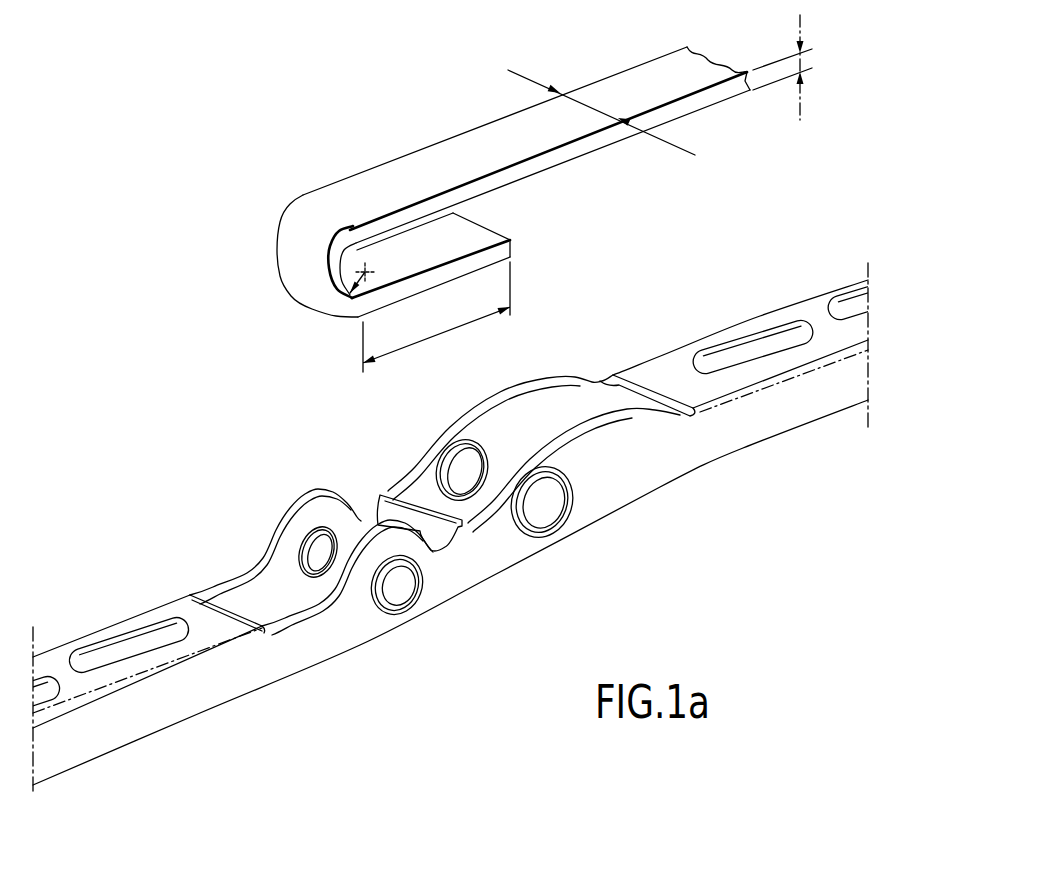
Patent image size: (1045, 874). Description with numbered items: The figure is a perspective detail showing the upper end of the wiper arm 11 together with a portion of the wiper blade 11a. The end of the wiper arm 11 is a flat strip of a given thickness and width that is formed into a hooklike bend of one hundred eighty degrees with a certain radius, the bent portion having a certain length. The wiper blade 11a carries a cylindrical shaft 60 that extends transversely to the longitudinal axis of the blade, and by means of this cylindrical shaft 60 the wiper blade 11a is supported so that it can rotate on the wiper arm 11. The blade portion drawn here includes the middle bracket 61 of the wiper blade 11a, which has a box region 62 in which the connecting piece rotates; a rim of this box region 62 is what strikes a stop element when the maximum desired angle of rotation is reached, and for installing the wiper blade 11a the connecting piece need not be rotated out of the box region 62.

The wiper arm 11 is at (408, 178).
The wiper blade 11a is at (743, 298).
The cylindrical shaft 60 is at (392, 487).
The middle bracket 61 is at (665, 365).
The box region 62 is at (553, 413).